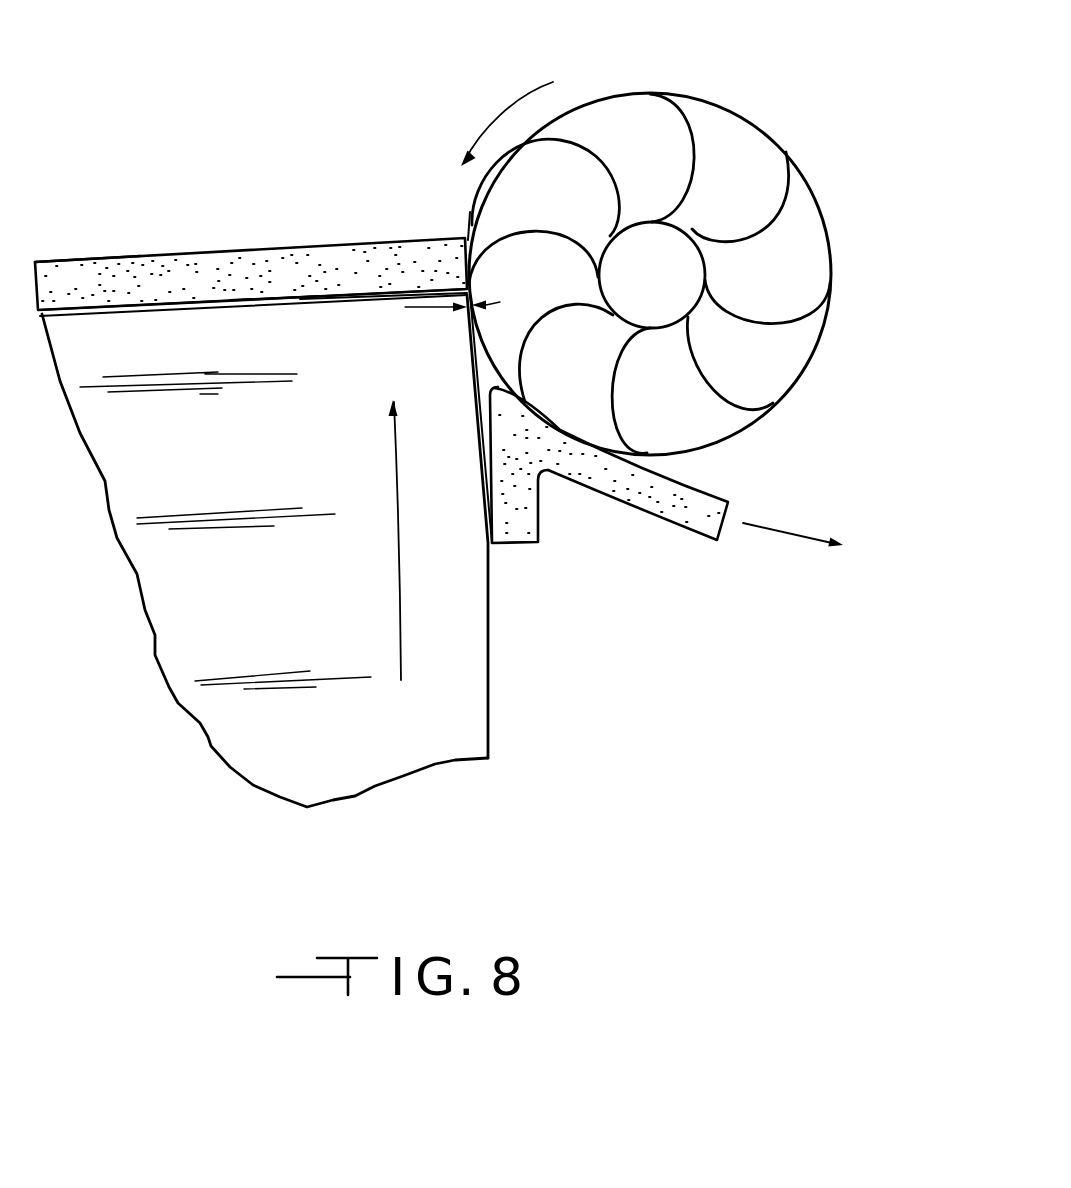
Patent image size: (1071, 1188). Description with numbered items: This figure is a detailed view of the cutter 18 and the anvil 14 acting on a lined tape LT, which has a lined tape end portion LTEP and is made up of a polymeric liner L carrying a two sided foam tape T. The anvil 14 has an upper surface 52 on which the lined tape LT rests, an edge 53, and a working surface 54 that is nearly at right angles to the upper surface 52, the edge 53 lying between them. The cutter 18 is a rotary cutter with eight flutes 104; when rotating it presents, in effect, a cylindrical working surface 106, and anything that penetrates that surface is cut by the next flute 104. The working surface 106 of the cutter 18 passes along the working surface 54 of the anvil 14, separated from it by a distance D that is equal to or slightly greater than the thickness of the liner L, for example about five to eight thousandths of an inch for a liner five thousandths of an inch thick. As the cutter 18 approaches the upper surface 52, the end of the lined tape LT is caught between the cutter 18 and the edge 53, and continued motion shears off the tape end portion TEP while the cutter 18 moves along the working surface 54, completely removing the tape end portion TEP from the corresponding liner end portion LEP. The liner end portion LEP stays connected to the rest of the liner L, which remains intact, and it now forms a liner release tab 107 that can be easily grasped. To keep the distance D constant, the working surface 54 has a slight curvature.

The anvil 14 is at (502, 682).
The cutter 18 is at (844, 320).
The upper surface 52 is at (240, 290).
The edge 53 is at (458, 297).
The working surface 54 is at (490, 592).
The flutes 104 is at (585, 145).
The cylindrical working surface 106 is at (475, 220).
The liner release tab 107 is at (482, 492).
The two sided foam tape T is at (327, 240).
The polymeric liner L is at (277, 292).
The lined tape LT is at (152, 238).
The distance D is at (500, 302).
The liner end portion LEP is at (492, 372).
The tape end portion TEP is at (705, 490).
The lined tape end portion LTEP is at (517, 547).